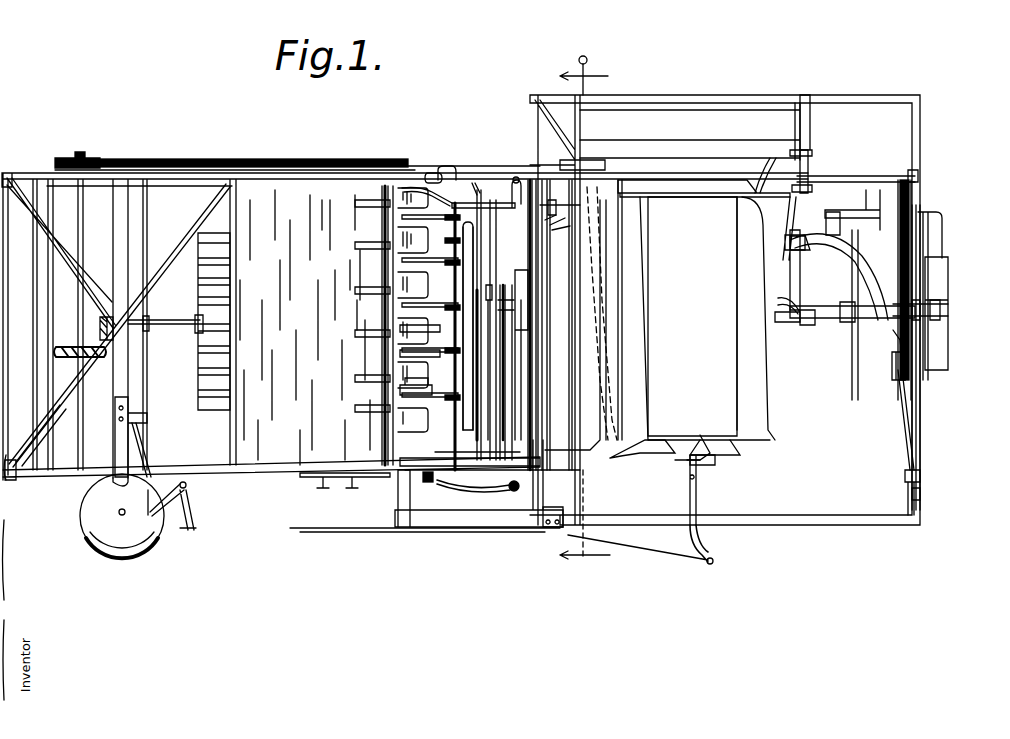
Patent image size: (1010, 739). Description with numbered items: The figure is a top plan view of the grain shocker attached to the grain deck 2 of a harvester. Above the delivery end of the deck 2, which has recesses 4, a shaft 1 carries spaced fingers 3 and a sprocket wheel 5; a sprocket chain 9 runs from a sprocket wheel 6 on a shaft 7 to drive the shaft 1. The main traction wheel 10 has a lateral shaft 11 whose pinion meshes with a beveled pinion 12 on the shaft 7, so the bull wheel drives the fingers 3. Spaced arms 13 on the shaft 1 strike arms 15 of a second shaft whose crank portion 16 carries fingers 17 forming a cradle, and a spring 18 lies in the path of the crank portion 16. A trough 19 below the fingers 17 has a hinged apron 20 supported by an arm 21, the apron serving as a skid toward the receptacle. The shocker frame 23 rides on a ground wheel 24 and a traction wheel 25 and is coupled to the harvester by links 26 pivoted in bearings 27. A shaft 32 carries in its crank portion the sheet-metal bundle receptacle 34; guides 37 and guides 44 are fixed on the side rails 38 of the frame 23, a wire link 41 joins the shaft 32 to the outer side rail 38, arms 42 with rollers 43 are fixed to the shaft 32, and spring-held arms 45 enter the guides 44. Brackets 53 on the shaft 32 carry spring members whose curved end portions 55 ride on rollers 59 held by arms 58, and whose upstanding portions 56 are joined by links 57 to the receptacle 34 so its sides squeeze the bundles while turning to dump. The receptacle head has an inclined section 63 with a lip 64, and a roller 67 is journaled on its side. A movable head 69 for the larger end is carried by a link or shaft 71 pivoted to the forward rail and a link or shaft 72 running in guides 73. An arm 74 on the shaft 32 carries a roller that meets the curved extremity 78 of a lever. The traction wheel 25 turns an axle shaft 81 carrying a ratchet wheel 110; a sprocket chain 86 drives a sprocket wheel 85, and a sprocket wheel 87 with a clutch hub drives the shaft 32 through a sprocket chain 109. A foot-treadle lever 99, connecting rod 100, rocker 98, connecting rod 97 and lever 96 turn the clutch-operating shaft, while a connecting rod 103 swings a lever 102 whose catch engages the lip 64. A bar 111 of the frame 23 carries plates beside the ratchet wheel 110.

The shaft 1 is at (372, 432).
The grain deck 2 is at (405, 323).
The fingers 3 is at (350, 292).
The recesses 4 is at (358, 374).
The sprocket wheel 5 is at (420, 165).
The sprocket wheel 6 is at (55, 160).
The shaft 7 is at (84, 442).
The sprocket chain 9 is at (180, 158).
The main traction wheel 10 is at (100, 310).
The shaft 11 is at (160, 322).
The beveled pinion 12 is at (53, 352).
The arms 13 is at (345, 492).
The arms 15 is at (450, 500).
The crank portion 16 is at (452, 438).
The fingers 17 is at (376, 387).
The spring 18 is at (494, 178).
The trough 19 is at (534, 332).
The hinged apron 20 is at (612, 292).
The arm 21 is at (625, 234).
The frame 23 is at (845, 525).
The ground wheel 24 is at (948, 352).
The traction wheel 25 is at (462, 238).
The links 26 is at (458, 165).
The bearings 27 is at (437, 168).
The shaft 32 is at (860, 318).
The bundle receptacle 34 is at (694, 326).
The guides 37 is at (935, 380).
The side rails 38 is at (922, 492).
The wire link 41 is at (910, 424).
The arms 42 is at (890, 372).
The rollers 43 is at (868, 385).
The guides 44 is at (910, 195).
The arms 45 is at (895, 400).
The brackets 53 is at (790, 270).
The curved end portions 55 is at (860, 262).
The upstanding portions 56 is at (800, 318).
The links 57 is at (780, 320).
The arms 58 is at (866, 200).
The rollers 59 is at (828, 228).
The inclined section 63 is at (660, 447).
The lip 64 is at (715, 465).
The roller 67 is at (785, 150).
The movable head 69 is at (724, 180).
The link or shaft 71 is at (680, 136).
The link or shaft 72 is at (808, 180).
The guides 73 is at (915, 172).
The arm 74 is at (945, 305).
The curved extremity 78 is at (942, 240).
The axle shaft 81 is at (525, 302).
The sprocket wheel 85 is at (422, 482).
The sprocket chain 86 is at (360, 348).
The sprocket wheel 87 is at (508, 500).
The lever 96 is at (545, 540).
The connecting rod 97 is at (335, 540).
The rocker 98 is at (194, 512).
The foot-treadle lever 99 is at (140, 420).
The connecting rod 100 is at (162, 456).
The lever 102 is at (690, 494).
The connecting rod 103 is at (688, 560).
The sprocket chain 109 is at (550, 418).
The ratchet wheel 110 is at (488, 290).
The bar 111 is at (480, 210).